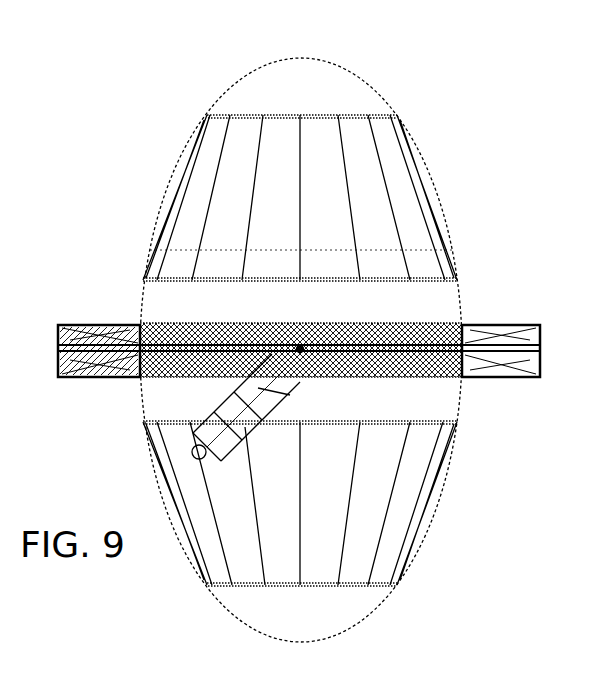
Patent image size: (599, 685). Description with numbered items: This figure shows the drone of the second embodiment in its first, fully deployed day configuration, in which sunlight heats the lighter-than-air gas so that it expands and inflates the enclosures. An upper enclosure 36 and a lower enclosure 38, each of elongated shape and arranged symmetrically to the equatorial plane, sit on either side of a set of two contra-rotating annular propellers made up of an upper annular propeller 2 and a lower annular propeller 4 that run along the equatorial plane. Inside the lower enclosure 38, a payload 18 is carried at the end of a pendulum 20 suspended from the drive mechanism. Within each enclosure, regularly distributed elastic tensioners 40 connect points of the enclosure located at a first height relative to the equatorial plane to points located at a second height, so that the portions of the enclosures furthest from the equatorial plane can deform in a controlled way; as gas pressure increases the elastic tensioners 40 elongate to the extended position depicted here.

The upper enclosure 36 is at (350, 90).
The lower enclosure 38 is at (345, 605).
The elastic tensioners 40 is at (400, 238).
The upper annular propeller 2 is at (490, 330).
The lower annular propeller 4 is at (490, 375).
The pendulum 20 is at (290, 395).
The payload 18 is at (247, 430).